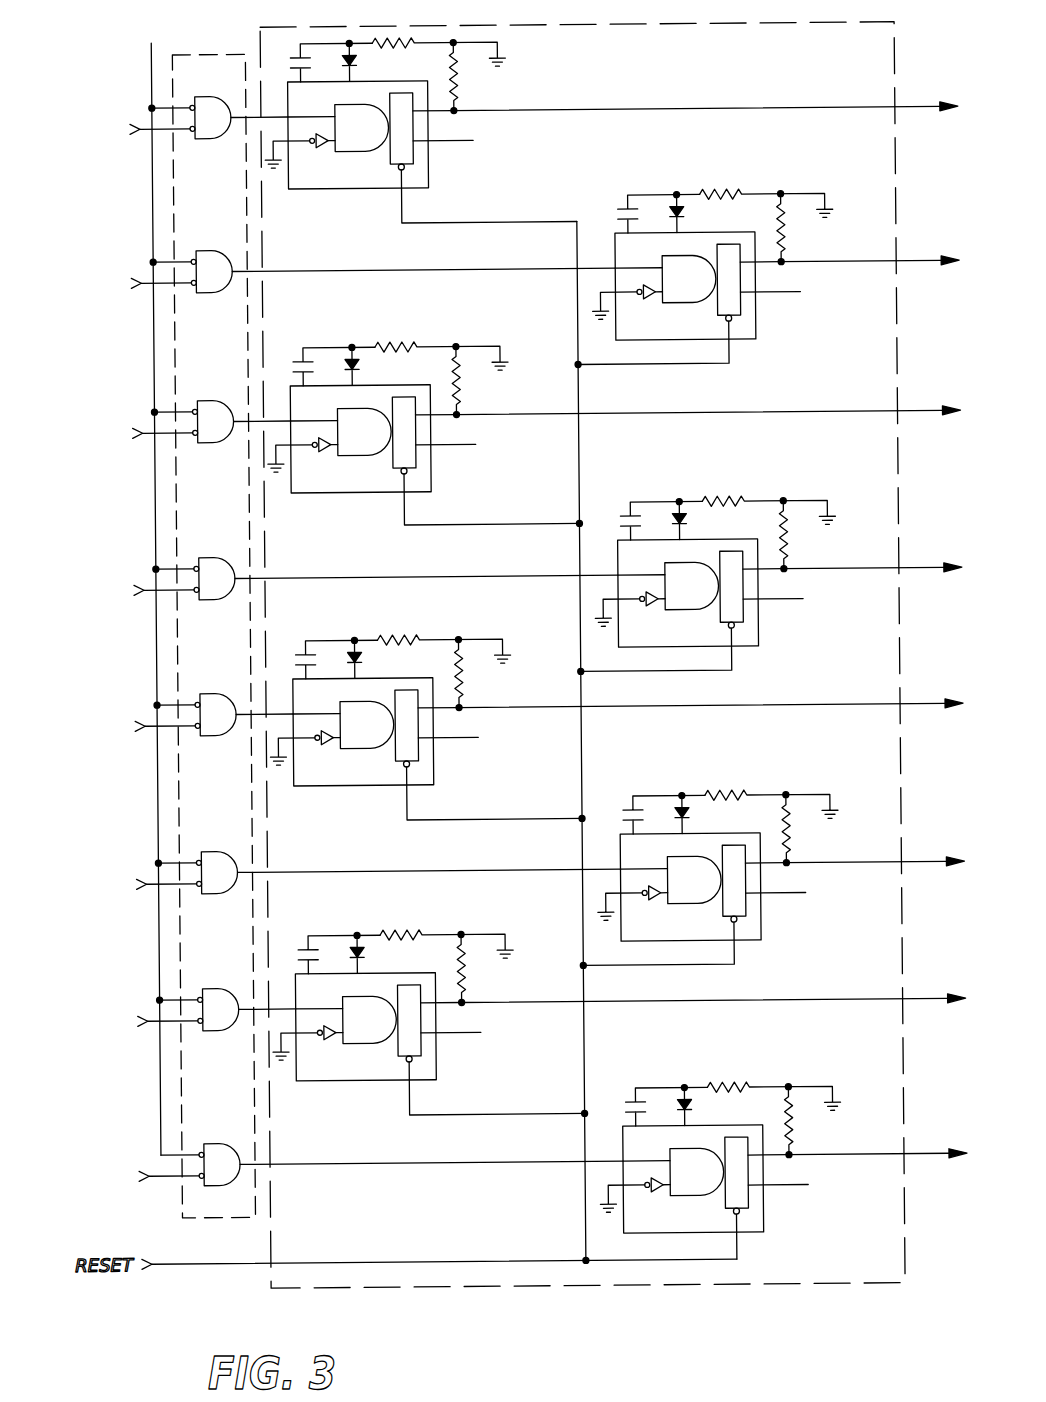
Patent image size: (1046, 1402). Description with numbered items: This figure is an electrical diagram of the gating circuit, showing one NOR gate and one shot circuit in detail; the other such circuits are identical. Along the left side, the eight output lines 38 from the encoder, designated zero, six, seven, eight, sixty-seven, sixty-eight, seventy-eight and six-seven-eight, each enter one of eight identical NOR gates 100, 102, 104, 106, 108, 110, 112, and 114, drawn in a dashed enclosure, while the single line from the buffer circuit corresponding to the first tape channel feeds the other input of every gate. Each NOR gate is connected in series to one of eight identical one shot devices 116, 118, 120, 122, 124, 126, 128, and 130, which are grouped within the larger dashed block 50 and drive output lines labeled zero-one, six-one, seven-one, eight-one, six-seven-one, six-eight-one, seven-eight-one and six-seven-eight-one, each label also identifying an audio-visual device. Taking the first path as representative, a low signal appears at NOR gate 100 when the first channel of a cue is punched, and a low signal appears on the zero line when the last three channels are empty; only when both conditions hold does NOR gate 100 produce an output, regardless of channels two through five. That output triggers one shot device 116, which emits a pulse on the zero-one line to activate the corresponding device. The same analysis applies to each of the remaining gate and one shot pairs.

The output lines 38 is at (90, 655).
The timer network 50 is at (692, 1292).
The NOR gate 100 is at (229, 74).
The NOR gate 102 is at (228, 224).
The NOR gate 104 is at (222, 398).
The NOR gate 106 is at (222, 555).
The NOR gate 108 is at (232, 658).
The NOR gate 110 is at (238, 824).
The NOR gate 112 is at (234, 958).
The NOR gate 114 is at (232, 1108).
The one shot device 116 is at (433, 170).
The one shot device 118 is at (759, 320).
The one shot device 120 is at (433, 472).
The one shot device 122 is at (759, 629).
The one shot device 124 is at (433, 765).
The one shot device 126 is at (759, 923).
The one shot device 128 is at (433, 1060).
The one shot device 130 is at (759, 1215).